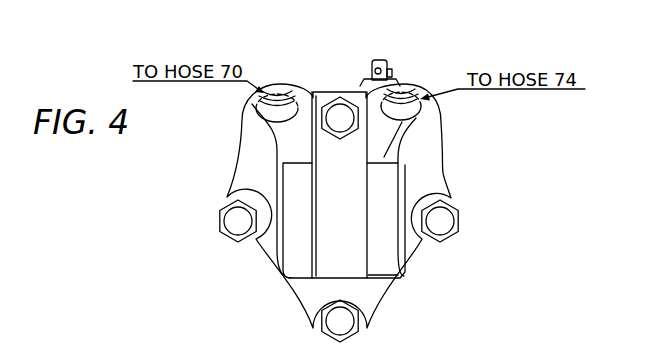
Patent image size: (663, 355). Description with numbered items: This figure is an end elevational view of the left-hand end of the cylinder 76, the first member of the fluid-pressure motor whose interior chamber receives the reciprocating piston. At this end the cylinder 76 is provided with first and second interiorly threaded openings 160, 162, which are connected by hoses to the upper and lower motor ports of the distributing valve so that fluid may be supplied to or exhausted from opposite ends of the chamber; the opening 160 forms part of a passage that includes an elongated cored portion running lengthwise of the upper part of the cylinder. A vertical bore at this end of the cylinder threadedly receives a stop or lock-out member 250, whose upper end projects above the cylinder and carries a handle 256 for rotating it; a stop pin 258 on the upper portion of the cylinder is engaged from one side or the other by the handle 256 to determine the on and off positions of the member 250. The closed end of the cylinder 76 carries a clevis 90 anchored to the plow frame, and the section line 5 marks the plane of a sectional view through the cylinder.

The section line 5- 5 is at (388, 42).
The cylinder 76 is at (431, 178).
The clevis 90 is at (388, 269).
The first interiorly threaded opening 160 is at (275, 92).
The second interiorly threaded opening 162 is at (421, 107).
The stop or lock-out member 250 is at (379, 60).
The handle 256 is at (374, 72).
The stop pin 258 is at (394, 73).